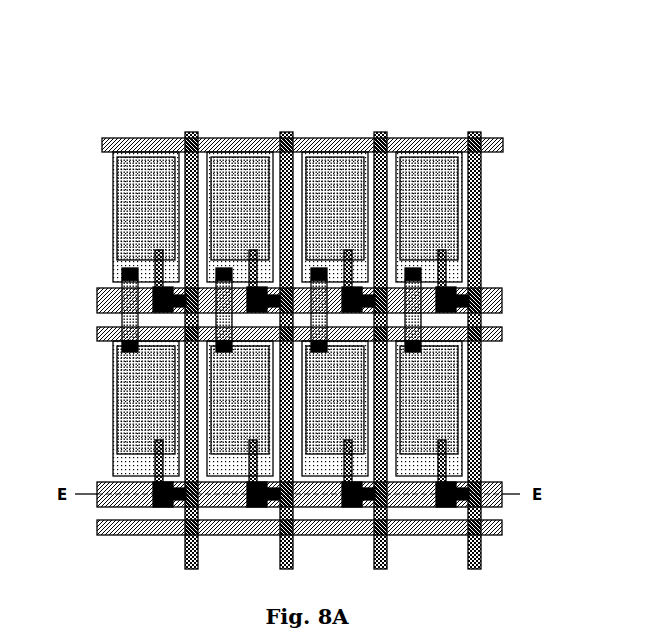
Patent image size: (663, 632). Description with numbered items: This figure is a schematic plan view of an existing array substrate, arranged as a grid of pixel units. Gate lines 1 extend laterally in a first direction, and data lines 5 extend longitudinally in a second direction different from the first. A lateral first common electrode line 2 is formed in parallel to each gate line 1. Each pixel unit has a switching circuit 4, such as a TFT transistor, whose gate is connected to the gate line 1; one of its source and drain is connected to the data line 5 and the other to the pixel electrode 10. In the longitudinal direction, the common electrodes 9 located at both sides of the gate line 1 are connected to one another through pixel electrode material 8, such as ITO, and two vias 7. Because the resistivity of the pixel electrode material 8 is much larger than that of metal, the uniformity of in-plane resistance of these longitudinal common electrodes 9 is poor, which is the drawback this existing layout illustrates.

The gate line 1 is at (97, 481).
The first common electrode line 2 is at (102, 526).
The switching circuit 4 is at (165, 508).
The data line 5 is at (283, 133).
The via 7 is at (120, 277).
The pixel electrode material 8 is at (120, 318).
The common electrode 9 is at (450, 268).
The pixel electrode 10 is at (132, 167).